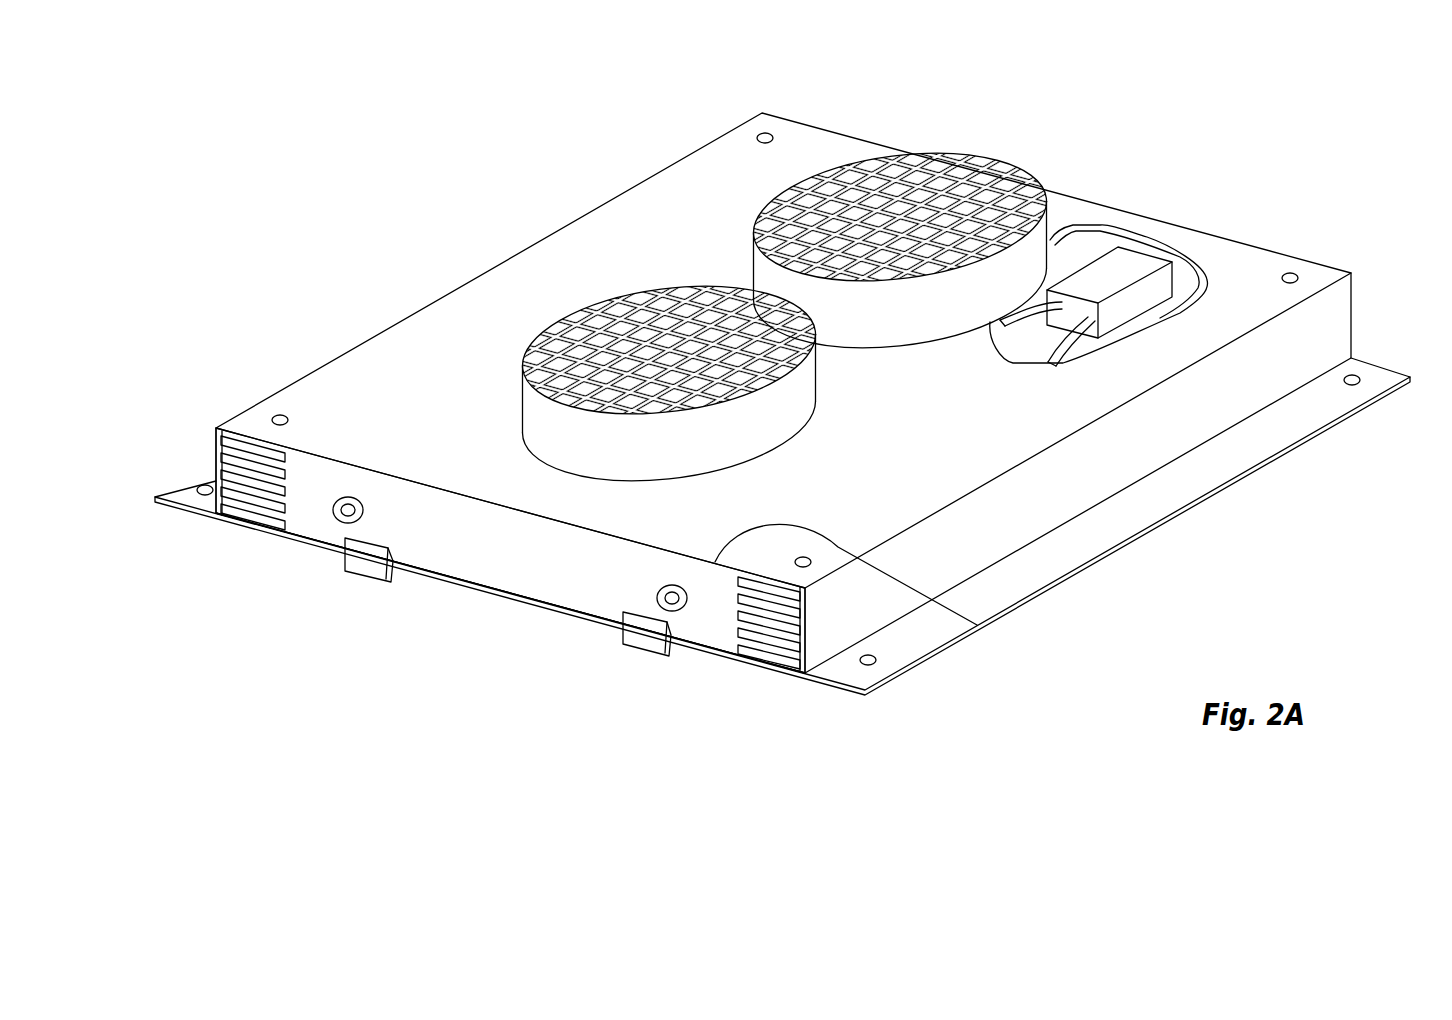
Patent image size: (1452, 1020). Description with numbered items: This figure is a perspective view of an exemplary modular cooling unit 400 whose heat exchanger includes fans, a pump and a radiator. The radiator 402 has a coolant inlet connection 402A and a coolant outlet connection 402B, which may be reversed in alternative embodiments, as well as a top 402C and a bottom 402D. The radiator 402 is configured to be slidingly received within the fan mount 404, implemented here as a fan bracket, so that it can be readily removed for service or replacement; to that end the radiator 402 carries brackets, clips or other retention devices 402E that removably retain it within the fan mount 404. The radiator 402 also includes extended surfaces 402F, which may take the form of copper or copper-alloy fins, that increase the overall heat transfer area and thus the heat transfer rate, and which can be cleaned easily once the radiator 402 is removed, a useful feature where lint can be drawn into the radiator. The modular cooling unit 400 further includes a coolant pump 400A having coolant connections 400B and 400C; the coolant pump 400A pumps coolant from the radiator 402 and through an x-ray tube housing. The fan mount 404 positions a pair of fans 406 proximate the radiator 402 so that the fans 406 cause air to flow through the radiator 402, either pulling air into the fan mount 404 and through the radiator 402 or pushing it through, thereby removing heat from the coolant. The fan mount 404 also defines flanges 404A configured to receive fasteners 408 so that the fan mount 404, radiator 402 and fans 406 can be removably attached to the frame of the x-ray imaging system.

The modular cooling unit 400 is at (425, 130).
The coolant pump 400A is at (1122, 263).
The coolant connection 400B is at (1058, 312).
The coolant connection 400C is at (1213, 290).
The radiator 402 is at (518, 568).
The coolant inlet connection 402A is at (345, 512).
The coolant outlet connection 402B is at (670, 604).
The top 402C is at (977, 625).
The bottom 402D is at (560, 610).
The retention device 402E is at (363, 577).
The extended surface 402F is at (771, 657).
The fan mount 404 is at (332, 397).
The flange 404A is at (192, 511).
The fan 406 is at (702, 303).
The fastener 408 is at (207, 487).